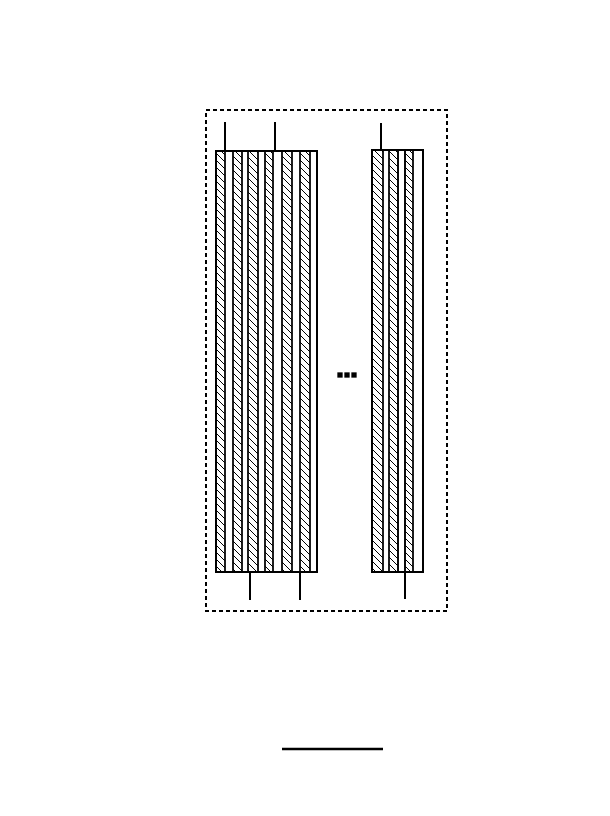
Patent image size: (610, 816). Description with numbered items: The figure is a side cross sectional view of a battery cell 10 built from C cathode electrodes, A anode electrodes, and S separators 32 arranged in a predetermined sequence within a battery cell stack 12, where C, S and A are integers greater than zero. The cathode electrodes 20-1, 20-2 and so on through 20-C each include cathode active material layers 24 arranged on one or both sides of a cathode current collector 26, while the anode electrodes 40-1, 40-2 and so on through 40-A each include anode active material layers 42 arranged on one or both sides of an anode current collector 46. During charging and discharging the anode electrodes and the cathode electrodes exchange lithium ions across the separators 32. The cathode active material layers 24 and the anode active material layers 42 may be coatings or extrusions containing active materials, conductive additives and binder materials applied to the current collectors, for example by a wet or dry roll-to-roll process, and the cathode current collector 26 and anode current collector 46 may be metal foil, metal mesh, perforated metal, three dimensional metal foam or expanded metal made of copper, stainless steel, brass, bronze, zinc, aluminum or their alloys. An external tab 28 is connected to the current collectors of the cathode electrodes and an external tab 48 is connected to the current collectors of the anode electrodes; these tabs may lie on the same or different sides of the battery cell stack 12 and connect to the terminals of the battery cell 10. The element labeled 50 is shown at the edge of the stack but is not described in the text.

The battery cell 10 is at (182, 86).
The battery cell stack 12 is at (433, 395).
The cathode electrode 20-1 is at (204, 187).
The cathode electrode 20-2 is at (283, 137).
The cathode electrode 20-C is at (388, 137).
The cathode active material layer 24 is at (215, 283).
The cathode current collector 26 is at (218, 335).
The external tab 28 is at (225, 135).
The separator 32 is at (235, 151).
The anode electrode 40-1 is at (224, 592).
The anode electrode 40-2 is at (295, 590).
The anode electrode 40-A is at (413, 589).
The anode active material layer 42 is at (240, 375).
The anode current collector 46 is at (247, 432).
The external tab 48 is at (248, 587).
The cell casing 50 is at (206, 222).